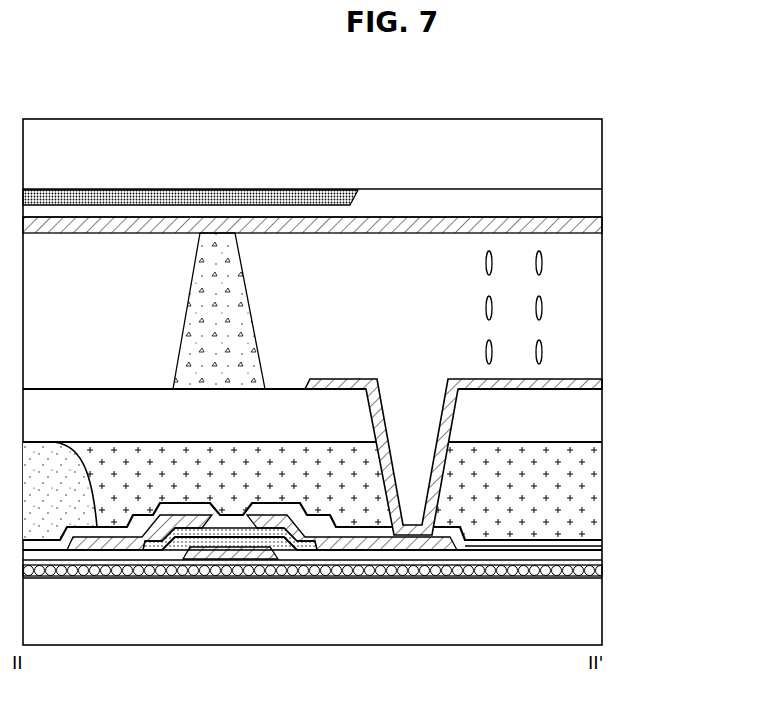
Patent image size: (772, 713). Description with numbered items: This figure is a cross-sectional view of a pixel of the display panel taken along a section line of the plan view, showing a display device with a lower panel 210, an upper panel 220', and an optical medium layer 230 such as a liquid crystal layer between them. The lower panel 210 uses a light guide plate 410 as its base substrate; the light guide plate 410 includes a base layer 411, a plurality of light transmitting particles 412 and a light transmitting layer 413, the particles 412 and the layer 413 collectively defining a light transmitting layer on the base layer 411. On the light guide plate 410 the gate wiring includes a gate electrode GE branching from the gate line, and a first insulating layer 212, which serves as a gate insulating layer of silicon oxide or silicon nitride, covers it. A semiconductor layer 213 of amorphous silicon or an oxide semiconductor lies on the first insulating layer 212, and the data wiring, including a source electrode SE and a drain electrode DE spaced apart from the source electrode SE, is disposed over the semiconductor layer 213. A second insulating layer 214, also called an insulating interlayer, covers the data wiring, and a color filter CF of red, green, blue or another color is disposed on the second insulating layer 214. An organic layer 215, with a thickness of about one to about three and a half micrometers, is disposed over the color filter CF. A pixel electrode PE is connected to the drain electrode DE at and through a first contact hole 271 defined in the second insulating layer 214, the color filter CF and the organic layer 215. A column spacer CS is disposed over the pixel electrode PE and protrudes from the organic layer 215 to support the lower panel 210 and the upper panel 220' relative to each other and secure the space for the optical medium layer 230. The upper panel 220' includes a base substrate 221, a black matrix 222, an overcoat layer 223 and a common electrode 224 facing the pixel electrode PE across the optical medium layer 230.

The base substrate 221 is at (588, 152).
The black matrix 222 is at (281, 192).
The overcoat layer 223 is at (588, 203).
The common electrode 224 is at (590, 228).
The upper panel 220' is at (374, 176).
The optical medium layer 230 is at (588, 308).
The first contact hole 271 is at (418, 418).
The pixel electrode PE is at (588, 387).
The organic layer 215 is at (588, 418).
The color filter CF is at (588, 492).
The second insulating layer 214 is at (603, 545).
The first insulating layer 212 is at (603, 555).
The light transmitting layer 413 is at (603, 570).
The light transmitting particle 412 is at (603, 577).
The base layer 411 is at (588, 608).
The light guide plate 410 is at (664, 565).
The lower display panel 210 is at (720, 612).
The column spacer CS is at (203, 292).
The source electrode SE is at (95, 551).
The semiconductor layer 213 is at (160, 548).
The gate electrode GE is at (230, 556).
The drain electrode DE is at (390, 545).